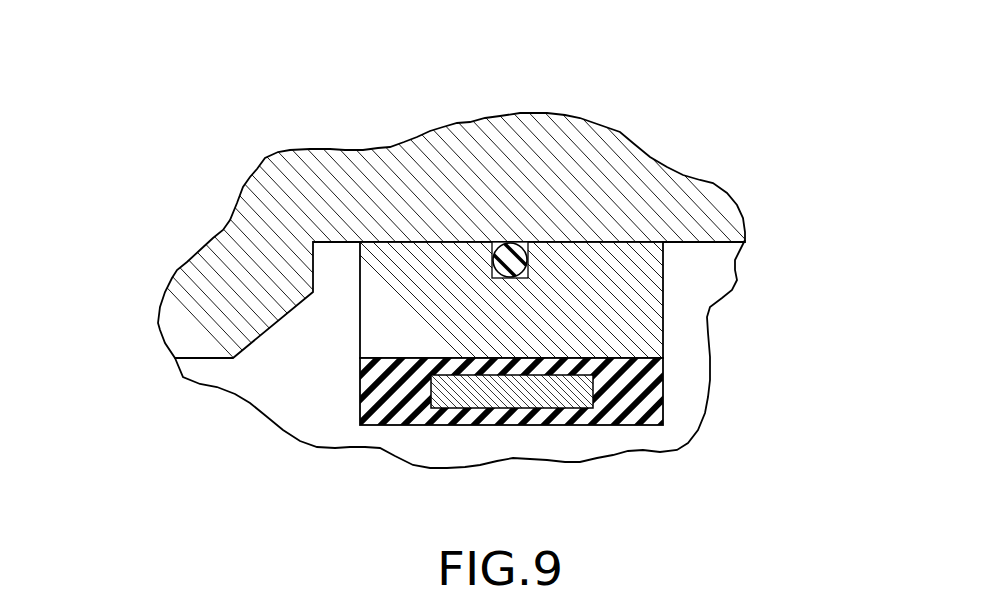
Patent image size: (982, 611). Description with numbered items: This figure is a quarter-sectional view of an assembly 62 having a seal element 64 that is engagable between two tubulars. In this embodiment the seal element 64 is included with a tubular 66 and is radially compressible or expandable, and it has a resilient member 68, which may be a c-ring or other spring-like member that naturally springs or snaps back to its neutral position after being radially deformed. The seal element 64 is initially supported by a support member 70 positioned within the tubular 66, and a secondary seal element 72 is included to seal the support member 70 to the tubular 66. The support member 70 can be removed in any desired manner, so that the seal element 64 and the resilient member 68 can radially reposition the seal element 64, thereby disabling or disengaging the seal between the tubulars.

The assembly 62 is at (434, 284).
The seal element 64 is at (640, 385).
The tubular 66 is at (250, 302).
The resilient member 68 is at (532, 400).
The support member 70 is at (633, 287).
The secondary seal element 72 is at (510, 243).